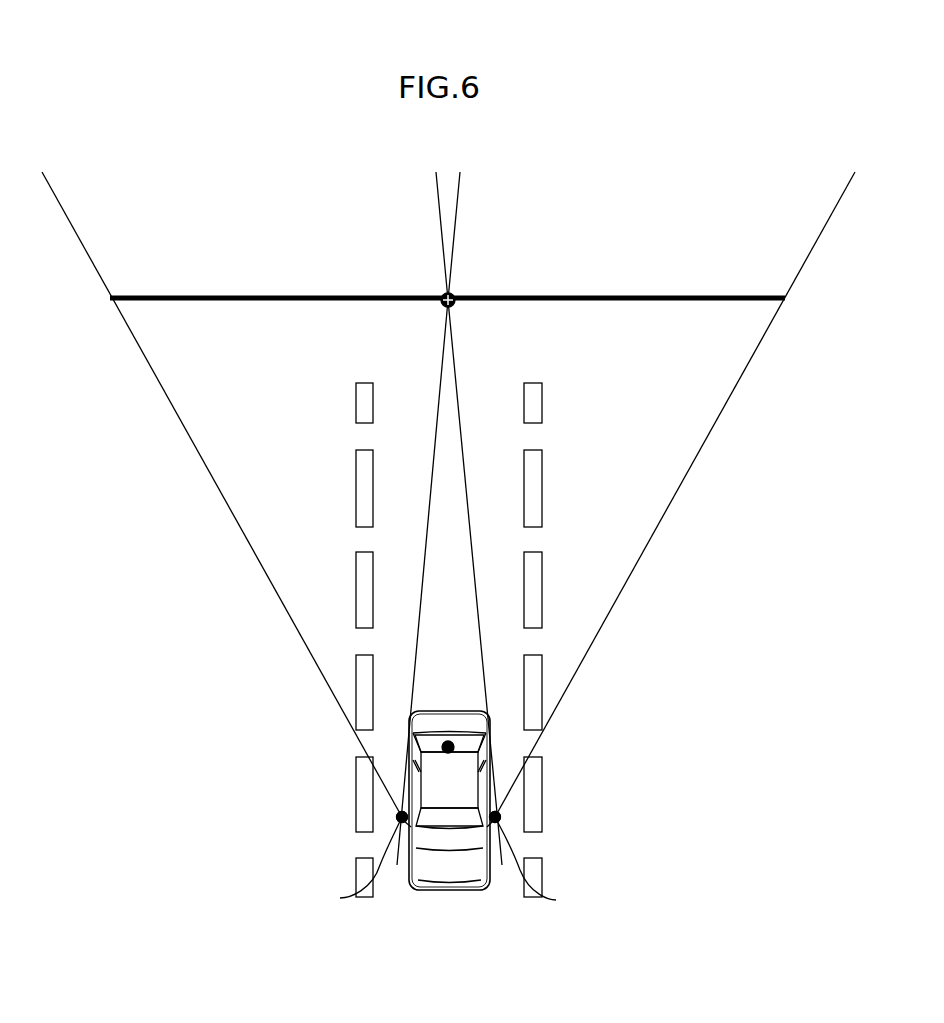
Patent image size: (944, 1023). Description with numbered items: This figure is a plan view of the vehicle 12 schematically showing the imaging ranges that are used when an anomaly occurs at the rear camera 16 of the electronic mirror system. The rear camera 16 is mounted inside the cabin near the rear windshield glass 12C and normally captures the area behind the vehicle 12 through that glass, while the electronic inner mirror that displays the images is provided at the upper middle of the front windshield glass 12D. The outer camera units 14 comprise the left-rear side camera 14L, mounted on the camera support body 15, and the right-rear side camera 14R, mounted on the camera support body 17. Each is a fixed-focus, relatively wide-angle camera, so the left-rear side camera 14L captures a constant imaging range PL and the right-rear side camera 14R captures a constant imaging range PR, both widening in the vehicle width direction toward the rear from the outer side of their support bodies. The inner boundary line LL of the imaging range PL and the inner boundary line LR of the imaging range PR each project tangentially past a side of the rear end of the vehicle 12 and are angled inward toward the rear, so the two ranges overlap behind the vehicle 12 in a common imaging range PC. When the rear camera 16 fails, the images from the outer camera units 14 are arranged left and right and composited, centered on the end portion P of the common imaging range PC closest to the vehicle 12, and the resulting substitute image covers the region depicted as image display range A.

The image display range A is at (672, 302).
The end portion P is at (453, 290).
The common imaging range PC is at (452, 193).
The imaging range PR is at (287, 575).
The imaging range PL is at (613, 575).
The boundary line LR is at (422, 588).
The boundary line LL is at (477, 588).
The vehicle 12 is at (483, 880).
The rear windshield glass 12C is at (450, 746).
The front windshield glass 12D is at (445, 847).
The rear camera 16 is at (446, 746).
The outer camera units 14 is at (449, 840).
The right-rear side camera 14R is at (402, 817).
The left-rear side camera 14L is at (495, 817).
The camera support body 17 is at (340, 898).
The camera support body 15 is at (556, 900).